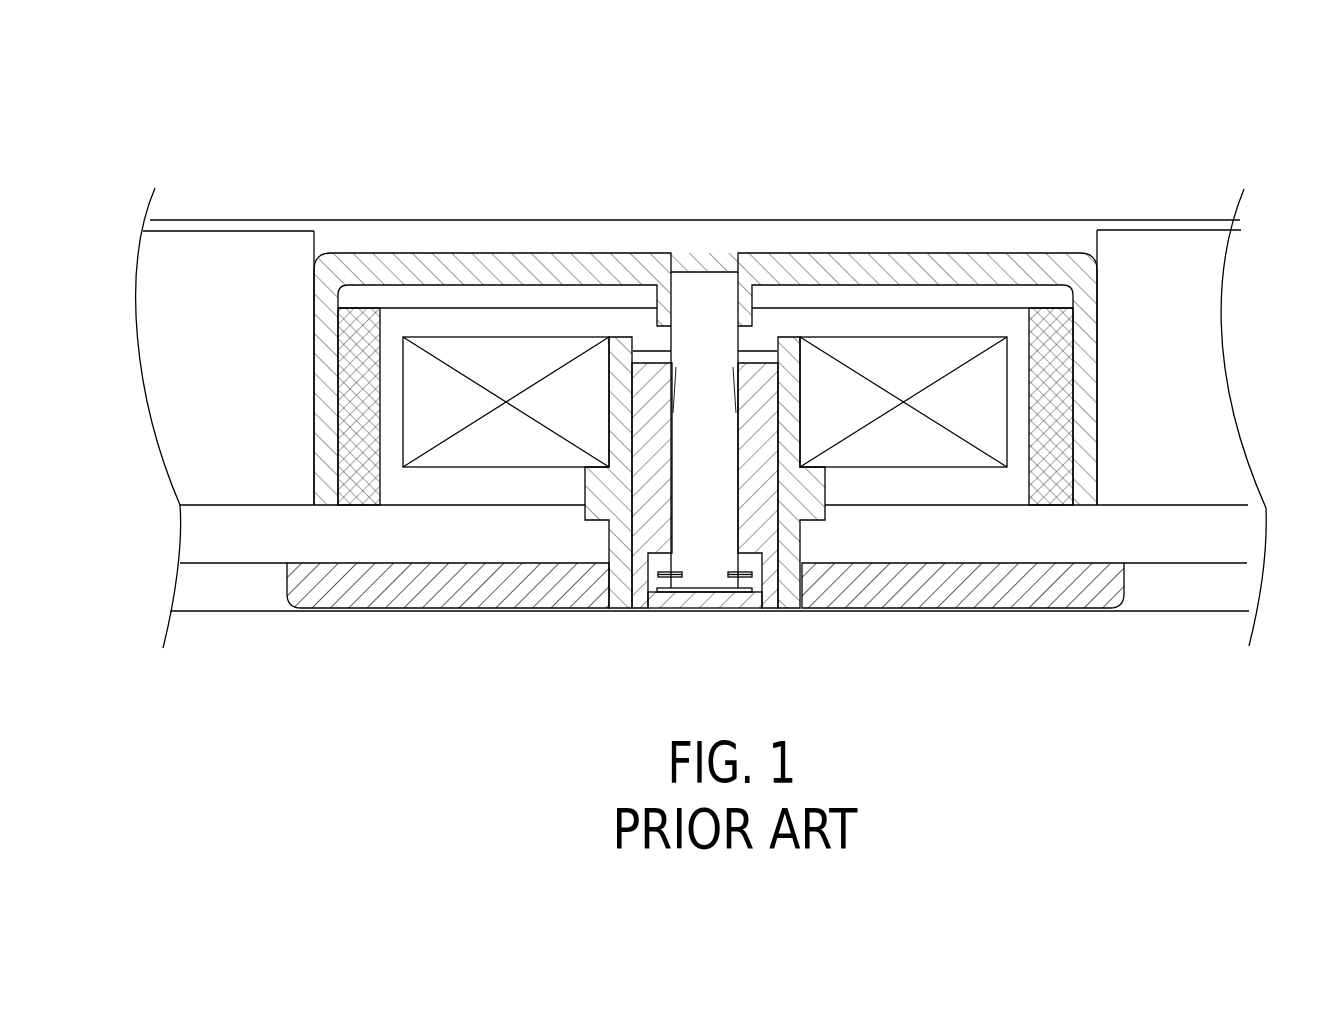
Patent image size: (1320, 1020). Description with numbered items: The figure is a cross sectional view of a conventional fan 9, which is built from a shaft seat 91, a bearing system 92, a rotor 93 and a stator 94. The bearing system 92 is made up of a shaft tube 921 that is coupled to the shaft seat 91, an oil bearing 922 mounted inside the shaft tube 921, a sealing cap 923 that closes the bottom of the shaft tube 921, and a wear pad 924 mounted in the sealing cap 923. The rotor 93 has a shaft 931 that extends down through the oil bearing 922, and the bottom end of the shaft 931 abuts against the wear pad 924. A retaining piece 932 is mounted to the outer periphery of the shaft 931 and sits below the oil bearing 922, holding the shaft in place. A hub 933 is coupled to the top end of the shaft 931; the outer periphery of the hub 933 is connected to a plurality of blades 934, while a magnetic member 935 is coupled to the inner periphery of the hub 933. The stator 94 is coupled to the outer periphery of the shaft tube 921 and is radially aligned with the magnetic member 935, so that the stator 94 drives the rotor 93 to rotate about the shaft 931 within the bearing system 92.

The fan 9 is at (701, 383).
The shaft seat 91 is at (302, 585).
The bearing system 92 is at (642, 543).
The shaft tube 921 is at (613, 535).
The oil bearing 922 is at (649, 540).
The sealing cap 923 is at (647, 603).
The wear pad 924 is at (704, 635).
The rotor 93 is at (766, 408).
The shaft 931 is at (700, 308).
The retaining piece 932 is at (752, 574).
The hub 933 is at (415, 262).
The blades 934 is at (268, 248).
The magnetic member 935 is at (1052, 482).
The stator 94 is at (924, 447).